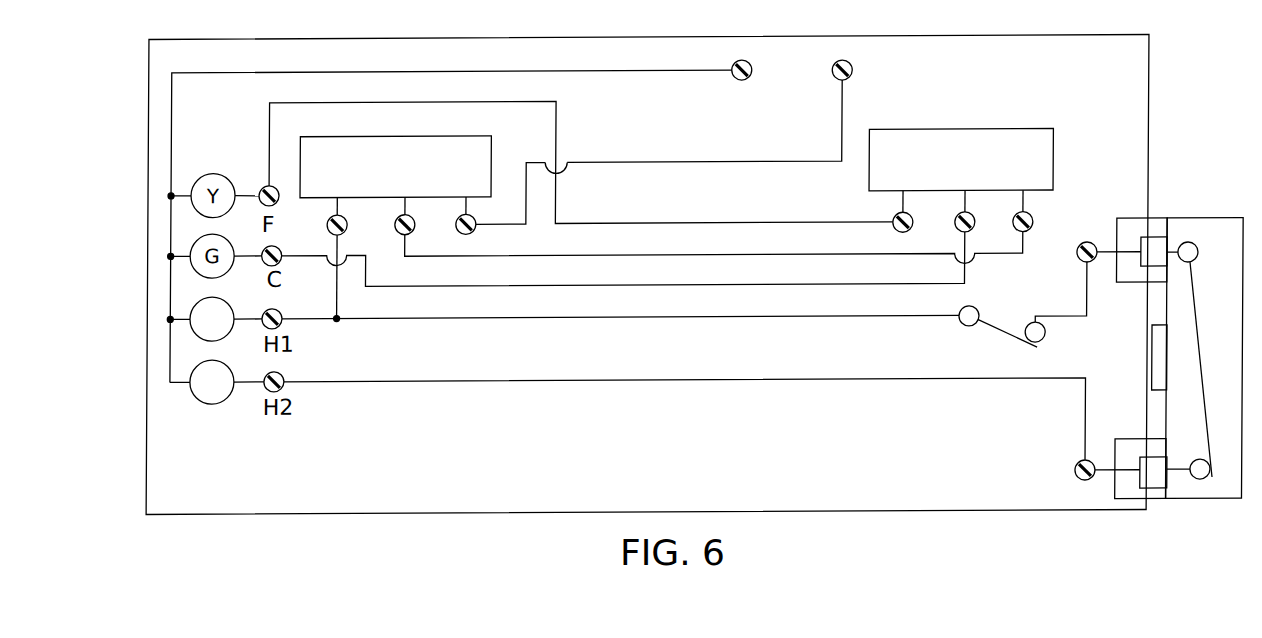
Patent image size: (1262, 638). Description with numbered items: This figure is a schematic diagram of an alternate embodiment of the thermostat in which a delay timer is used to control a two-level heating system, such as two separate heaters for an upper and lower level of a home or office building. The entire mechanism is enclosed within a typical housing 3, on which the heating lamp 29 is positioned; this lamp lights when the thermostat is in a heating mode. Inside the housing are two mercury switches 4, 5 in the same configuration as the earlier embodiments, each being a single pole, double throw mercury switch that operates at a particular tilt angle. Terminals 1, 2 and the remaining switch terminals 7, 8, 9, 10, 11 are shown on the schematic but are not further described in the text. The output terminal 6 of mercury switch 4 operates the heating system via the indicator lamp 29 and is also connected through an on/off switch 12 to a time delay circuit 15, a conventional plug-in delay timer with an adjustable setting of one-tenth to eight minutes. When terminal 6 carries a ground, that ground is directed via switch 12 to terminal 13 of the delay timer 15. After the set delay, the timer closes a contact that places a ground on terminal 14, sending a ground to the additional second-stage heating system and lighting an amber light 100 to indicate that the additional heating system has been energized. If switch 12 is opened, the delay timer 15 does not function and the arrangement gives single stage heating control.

The terminal 1 is at (748, 80).
The terminal 2 is at (848, 80).
The housing 3 is at (1148, 99).
The mercury switch 4 is at (427, 137).
The mercury switch 5 is at (994, 132).
The output terminal 6 is at (344, 233).
The MOP terminal 7 is at (418, 218).
The COM terminal 8 is at (478, 213).
The MCL terminal 9 is at (910, 219).
The MOP terminal 10 is at (978, 213).
The COM terminal 11 is at (1036, 213).
The on/off switch 12 is at (963, 327).
The terminal 13 is at (1077, 256).
The terminal 14 is at (1075, 470).
The time delay circuit 15 is at (1234, 291).
The heating lamp 29 is at (233, 296).
The amber light 100 is at (227, 403).